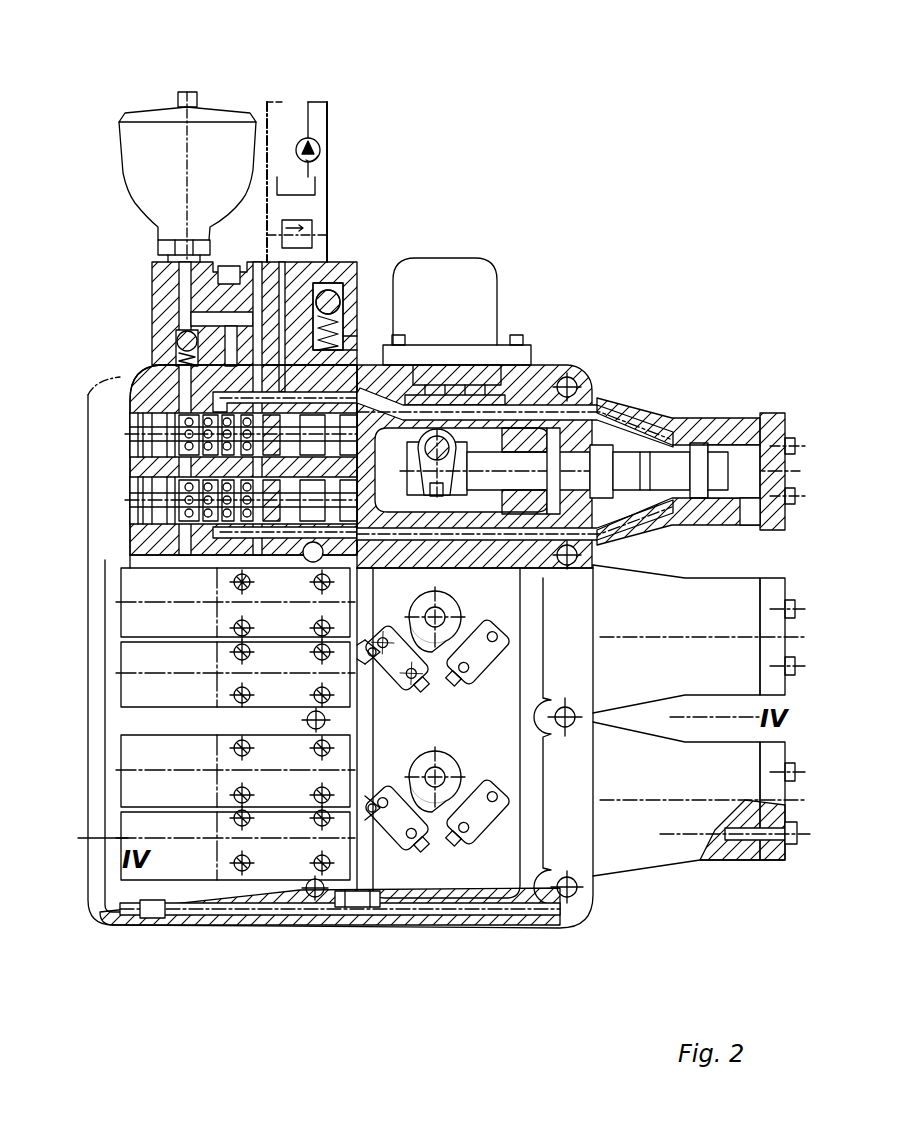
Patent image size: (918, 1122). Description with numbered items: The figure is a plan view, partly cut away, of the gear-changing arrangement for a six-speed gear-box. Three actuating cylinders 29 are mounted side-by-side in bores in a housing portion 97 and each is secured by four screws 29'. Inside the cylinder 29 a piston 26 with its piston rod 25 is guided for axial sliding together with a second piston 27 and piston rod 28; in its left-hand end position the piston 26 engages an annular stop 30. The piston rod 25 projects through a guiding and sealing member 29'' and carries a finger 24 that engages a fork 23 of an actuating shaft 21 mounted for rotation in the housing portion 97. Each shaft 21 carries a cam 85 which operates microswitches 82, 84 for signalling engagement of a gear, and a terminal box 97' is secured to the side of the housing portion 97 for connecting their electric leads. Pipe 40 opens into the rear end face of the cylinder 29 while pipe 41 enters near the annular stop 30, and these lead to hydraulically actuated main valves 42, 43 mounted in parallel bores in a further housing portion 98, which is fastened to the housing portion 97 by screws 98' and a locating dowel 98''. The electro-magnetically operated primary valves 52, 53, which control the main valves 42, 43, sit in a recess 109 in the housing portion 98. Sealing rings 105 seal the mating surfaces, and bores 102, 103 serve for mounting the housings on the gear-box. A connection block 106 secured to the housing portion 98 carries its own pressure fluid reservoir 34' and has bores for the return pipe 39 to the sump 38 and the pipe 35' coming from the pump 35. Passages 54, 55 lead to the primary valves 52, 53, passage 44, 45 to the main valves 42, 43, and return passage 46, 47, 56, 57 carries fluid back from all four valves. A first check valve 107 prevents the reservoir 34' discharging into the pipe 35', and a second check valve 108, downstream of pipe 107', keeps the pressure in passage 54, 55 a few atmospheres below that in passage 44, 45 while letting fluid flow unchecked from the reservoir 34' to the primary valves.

The pressure fluid reservoir 34' is at (182, 151).
The return pipe 46 is at (258, 262).
The return pipe 47 is at (297, 182).
The return passage 56 is at (297, 182).
The return passage 57 is at (297, 182).
The pump 35 is at (332, 138).
The sump 38 is at (296, 195).
The return pipe 39 is at (238, 264).
The pipe from pump 35' is at (323, 241).
The first check valve 107 is at (362, 277).
The passage to primary valves 54 is at (362, 322).
The passage to primary valves 55 is at (328, 316).
The connection block 106 is at (165, 288).
The pipe 107' is at (169, 328).
The second check valve 108 is at (180, 346).
The passage to main valves 44 is at (182, 388).
The passage to main valves 45 is at (243, 460).
The main valve 43 is at (177, 424).
The main valve 42 is at (172, 494).
The sealing ring 105 is at (360, 392).
The terminal box 97' is at (457, 331).
The pipe 41 is at (540, 426).
The guiding and sealing member 29'' is at (575, 351).
The piston 26 is at (600, 458).
The piston rod 28 is at (673, 462).
The second piston 27 is at (697, 458).
The actuating cylinder 29 is at (701, 610).
The actuating shaft 21 is at (422, 452).
The fork 23 is at (432, 489).
The finger 24 is at (440, 476).
The piston rod 25 is at (600, 471).
The annular stop 30 is at (602, 497).
The pipe 40 is at (742, 500).
The primary valve 53 is at (235, 687).
The primary valve 52 is at (235, 761).
The mounting bore 103 is at (316, 576).
The cam 85 is at (448, 600).
The microswitch 82 is at (400, 685).
The microswitch 84 is at (490, 683).
The mounting bore 102 is at (567, 568).
The recess 109 is at (104, 920).
The housing portion 98 is at (330, 937).
The screw 98' is at (340, 944).
The locating dowel 98'' is at (403, 938).
The housing portion 97 is at (340, 681).
The screw 29' is at (768, 897).